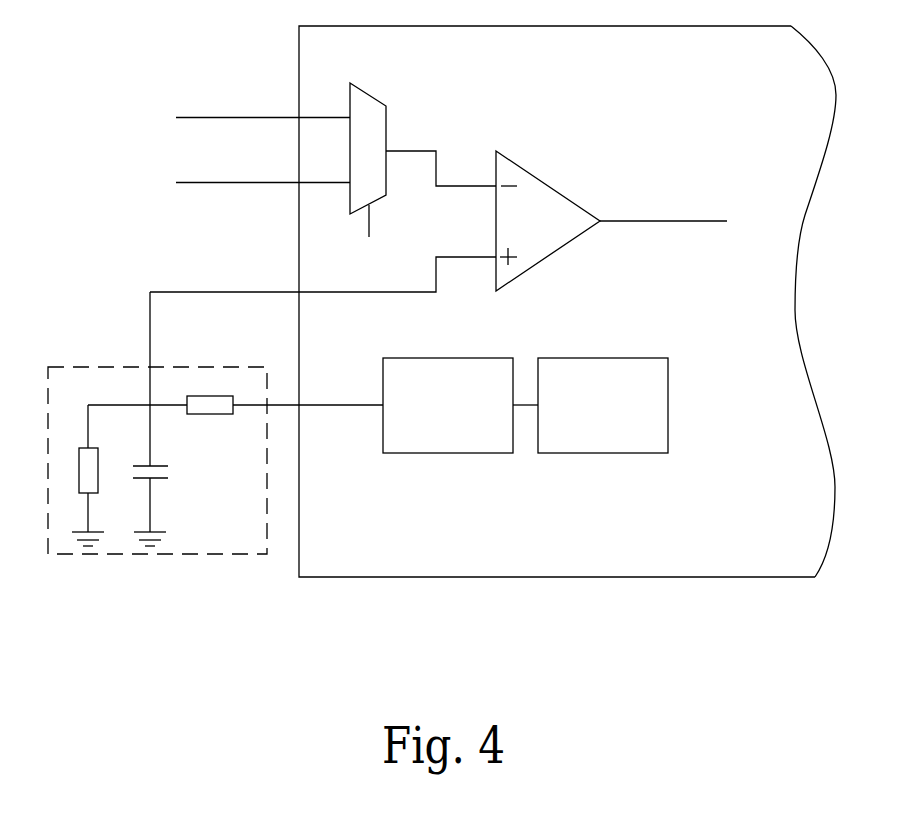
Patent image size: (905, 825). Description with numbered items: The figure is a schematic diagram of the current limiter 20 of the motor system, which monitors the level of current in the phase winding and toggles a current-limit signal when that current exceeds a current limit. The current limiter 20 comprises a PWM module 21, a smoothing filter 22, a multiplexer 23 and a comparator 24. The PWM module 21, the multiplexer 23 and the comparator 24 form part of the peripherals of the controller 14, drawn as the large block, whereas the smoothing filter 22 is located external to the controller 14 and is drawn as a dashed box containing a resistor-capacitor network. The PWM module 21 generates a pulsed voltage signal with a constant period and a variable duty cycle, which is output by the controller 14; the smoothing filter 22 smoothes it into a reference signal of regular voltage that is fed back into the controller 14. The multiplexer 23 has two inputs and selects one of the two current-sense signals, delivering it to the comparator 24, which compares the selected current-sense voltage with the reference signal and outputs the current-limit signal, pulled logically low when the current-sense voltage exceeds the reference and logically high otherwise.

The controller 14 is at (544, 577).
The current limiter 20 is at (442, 360).
The PWM module 21 is at (442, 453).
The smoothing filter 22 is at (206, 554).
The multiplexer 23 is at (370, 93).
The comparator 24 is at (532, 173).